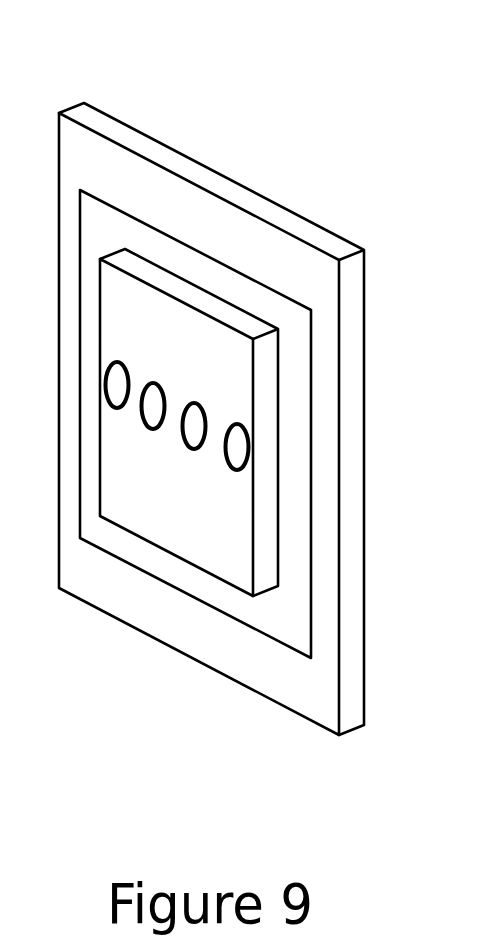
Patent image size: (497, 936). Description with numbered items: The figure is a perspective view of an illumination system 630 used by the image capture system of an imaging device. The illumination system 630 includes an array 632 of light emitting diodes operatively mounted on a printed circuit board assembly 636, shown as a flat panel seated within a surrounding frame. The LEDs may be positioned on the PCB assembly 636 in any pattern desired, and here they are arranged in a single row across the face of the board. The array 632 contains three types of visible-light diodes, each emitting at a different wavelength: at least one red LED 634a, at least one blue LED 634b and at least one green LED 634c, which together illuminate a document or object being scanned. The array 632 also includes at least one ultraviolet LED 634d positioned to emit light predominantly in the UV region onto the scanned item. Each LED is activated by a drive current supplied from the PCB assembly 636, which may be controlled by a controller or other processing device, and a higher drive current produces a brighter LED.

The illumination system 630 is at (297, 88).
The array 632 is at (177, 399).
The red LED 634a is at (114, 360).
The blue LED 634b is at (156, 381).
The green LED 634c is at (195, 401).
The ultraviolet LED 634d is at (227, 423).
The printed circuit board assembly 636 is at (267, 407).